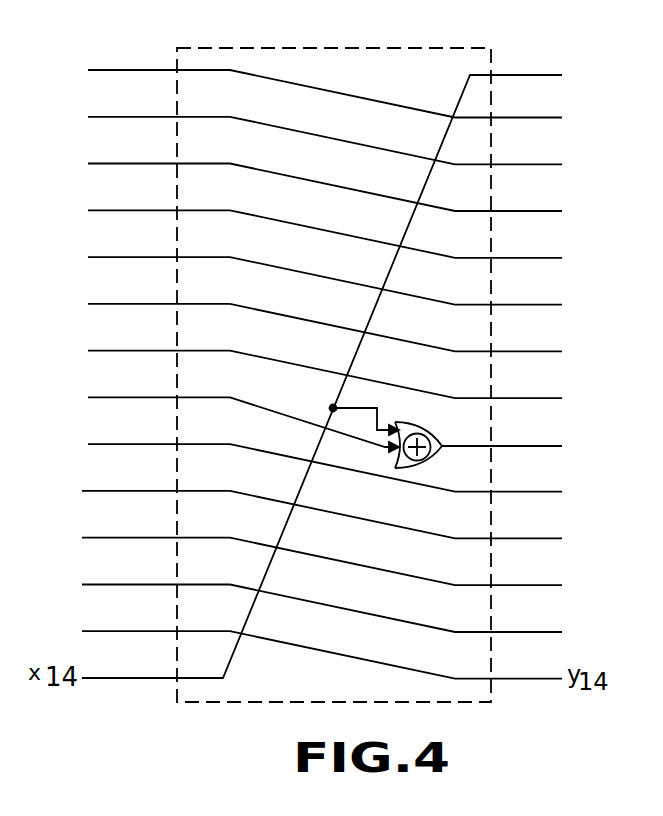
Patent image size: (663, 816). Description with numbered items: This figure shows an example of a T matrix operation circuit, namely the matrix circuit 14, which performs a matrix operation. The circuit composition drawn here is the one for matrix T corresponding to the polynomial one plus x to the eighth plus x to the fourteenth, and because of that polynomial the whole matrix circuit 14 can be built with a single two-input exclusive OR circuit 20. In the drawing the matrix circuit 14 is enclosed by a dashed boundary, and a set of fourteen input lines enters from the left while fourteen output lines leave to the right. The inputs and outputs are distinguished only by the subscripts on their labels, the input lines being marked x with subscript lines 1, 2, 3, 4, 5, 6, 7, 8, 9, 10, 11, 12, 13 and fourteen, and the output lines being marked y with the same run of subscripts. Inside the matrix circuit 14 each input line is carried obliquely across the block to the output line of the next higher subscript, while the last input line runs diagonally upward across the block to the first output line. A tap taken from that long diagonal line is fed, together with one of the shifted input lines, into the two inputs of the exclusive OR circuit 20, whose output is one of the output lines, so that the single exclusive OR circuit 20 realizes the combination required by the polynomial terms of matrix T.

The matrix circuit 14 is at (396, 48).
The exclusive OR circuit 20 is at (436, 436).
The signal line x1 to y2 1 is at (321, 85).
The signal line x2 to y3 2 is at (321, 132).
The signal line x3 to y4 3 is at (321, 179).
The signal line x4 to y5 4 is at (321, 224).
The signal line x5 to y6 5 is at (321, 272).
The signal line x6 to y7 6 is at (321, 319).
The signal line x7 to y8 7 is at (321, 366).
The signal line x8 to XOR gate 8 is at (321, 413).
The signal line x9 to y10 9 is at (321, 459).
The signal line x10 to y11 10 is at (318, 506).
The signal line x11 to y12 11 is at (318, 553).
The signal line x12 to y13 12 is at (318, 600).
The signal line x13 to y14 13 is at (318, 646).